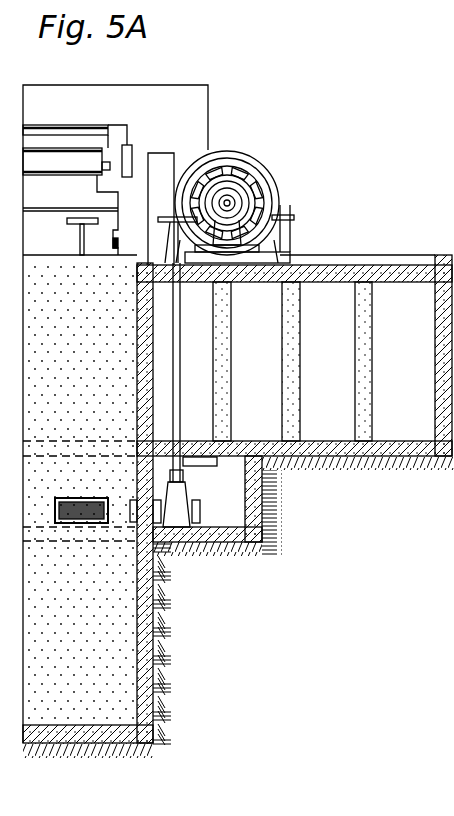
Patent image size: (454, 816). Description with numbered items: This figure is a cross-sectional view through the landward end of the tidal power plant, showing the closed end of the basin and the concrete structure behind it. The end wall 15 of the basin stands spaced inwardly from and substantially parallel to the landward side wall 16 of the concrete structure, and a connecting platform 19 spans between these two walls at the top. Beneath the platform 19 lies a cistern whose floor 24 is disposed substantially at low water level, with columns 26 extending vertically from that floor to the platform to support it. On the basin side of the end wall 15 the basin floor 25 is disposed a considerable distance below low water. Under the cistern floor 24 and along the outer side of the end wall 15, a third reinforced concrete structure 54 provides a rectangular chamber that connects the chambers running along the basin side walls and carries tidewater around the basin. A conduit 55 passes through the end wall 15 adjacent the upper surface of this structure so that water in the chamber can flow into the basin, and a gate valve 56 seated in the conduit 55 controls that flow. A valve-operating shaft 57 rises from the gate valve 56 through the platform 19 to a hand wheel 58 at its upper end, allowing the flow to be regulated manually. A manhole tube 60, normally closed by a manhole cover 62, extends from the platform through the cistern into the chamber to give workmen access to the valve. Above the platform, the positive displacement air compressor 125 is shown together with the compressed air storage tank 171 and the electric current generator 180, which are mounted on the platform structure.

The compressed air storage tank 171 is at (178, 104).
The positive displacement air compressor 125 is at (73, 153).
The electric current generator 180 is at (258, 172).
The hand wheel 58 is at (165, 218).
The end wall 15 is at (137, 264).
The connecting platform 19 is at (330, 265).
The side wall 16 is at (440, 262).
The cistern floor 24 is at (239, 441).
The manhole cover 62 is at (238, 283).
The manhole tube 60 is at (200, 348).
The column 26 is at (357, 378).
The valve-operating shaft 57 is at (175, 383).
The gate valve 56 is at (190, 540).
The third structure 54 is at (263, 493).
The basin floor 25 is at (78, 725).
The conduit 55 is at (128, 515).